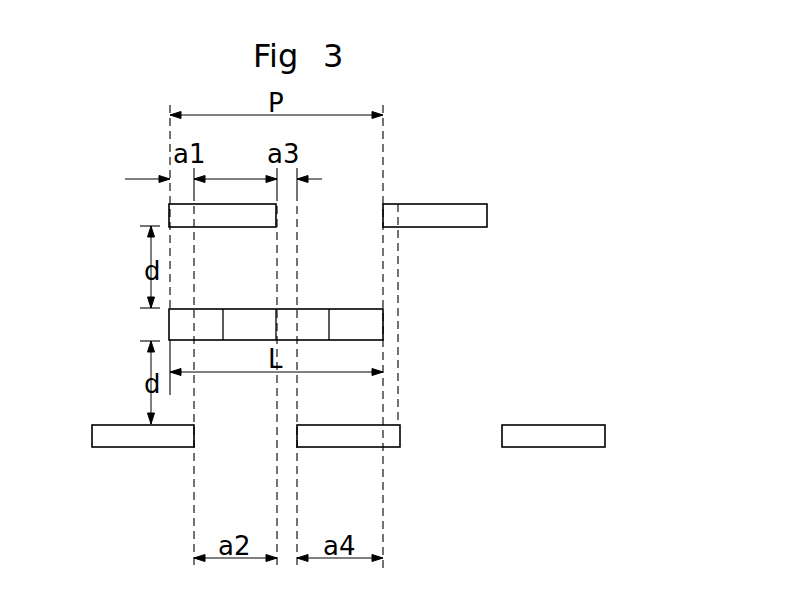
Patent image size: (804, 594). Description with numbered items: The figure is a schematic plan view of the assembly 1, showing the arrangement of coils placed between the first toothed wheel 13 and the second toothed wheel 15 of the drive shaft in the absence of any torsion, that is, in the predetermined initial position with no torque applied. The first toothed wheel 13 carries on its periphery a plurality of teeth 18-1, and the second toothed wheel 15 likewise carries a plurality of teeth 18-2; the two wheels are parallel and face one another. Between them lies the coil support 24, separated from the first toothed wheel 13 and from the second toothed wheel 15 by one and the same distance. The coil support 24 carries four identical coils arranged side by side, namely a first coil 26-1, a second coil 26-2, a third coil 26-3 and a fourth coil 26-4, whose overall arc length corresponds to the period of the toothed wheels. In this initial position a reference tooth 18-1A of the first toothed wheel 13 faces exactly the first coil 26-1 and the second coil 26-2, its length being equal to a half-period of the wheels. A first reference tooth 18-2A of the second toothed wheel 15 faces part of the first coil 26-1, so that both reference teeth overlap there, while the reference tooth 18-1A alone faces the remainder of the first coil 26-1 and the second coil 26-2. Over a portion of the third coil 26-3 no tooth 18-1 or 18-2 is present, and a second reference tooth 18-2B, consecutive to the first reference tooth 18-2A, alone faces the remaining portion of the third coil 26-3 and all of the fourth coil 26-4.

The assembly 1 is at (576, 295).
The first toothed wheel 13 is at (531, 178).
The second toothed wheel 15 is at (652, 398).
The teeth 18-1 is at (420, 213).
The reference tooth 18-1A is at (213, 212).
The teeth 18-2 is at (530, 433).
The first reference tooth 18-2A is at (118, 435).
The second reference tooth 18-2B is at (323, 435).
The coil support 24 is at (158, 326).
The first coil 26-1 is at (188, 318).
The second coil 26-2 is at (250, 339).
The third coil 26-3 is at (292, 318).
The fourth coil 26-4 is at (350, 339).